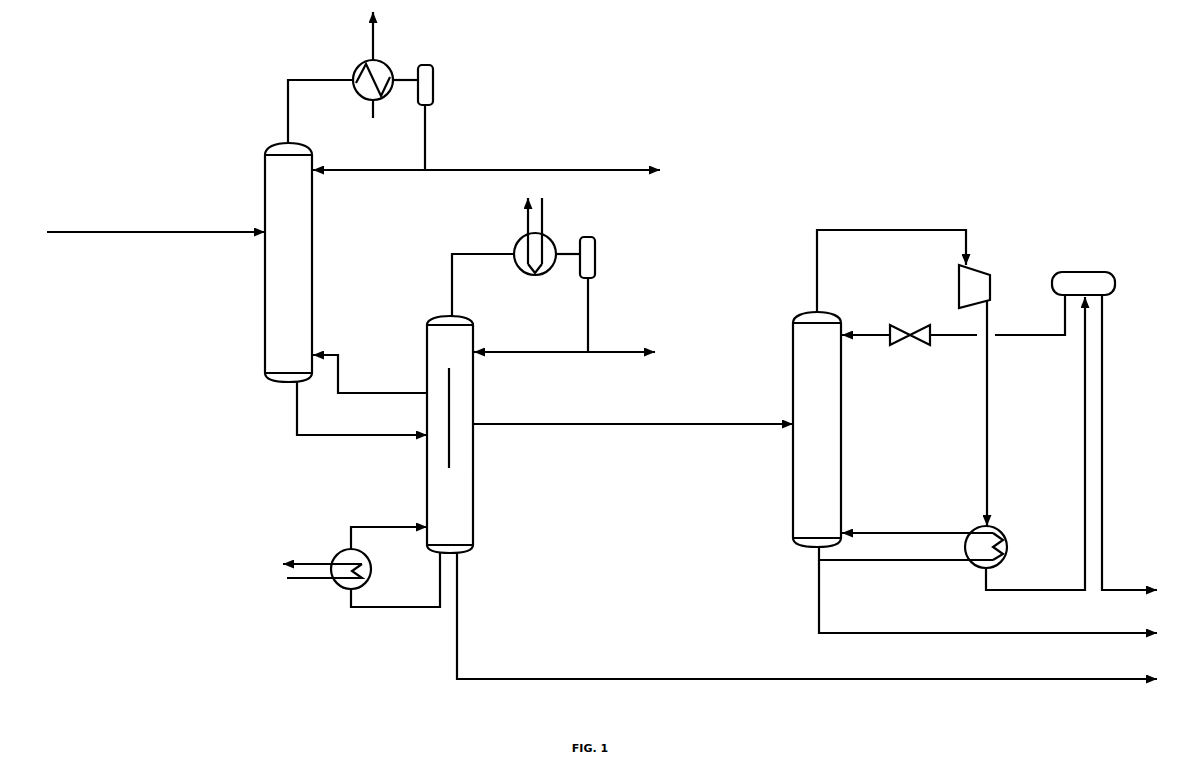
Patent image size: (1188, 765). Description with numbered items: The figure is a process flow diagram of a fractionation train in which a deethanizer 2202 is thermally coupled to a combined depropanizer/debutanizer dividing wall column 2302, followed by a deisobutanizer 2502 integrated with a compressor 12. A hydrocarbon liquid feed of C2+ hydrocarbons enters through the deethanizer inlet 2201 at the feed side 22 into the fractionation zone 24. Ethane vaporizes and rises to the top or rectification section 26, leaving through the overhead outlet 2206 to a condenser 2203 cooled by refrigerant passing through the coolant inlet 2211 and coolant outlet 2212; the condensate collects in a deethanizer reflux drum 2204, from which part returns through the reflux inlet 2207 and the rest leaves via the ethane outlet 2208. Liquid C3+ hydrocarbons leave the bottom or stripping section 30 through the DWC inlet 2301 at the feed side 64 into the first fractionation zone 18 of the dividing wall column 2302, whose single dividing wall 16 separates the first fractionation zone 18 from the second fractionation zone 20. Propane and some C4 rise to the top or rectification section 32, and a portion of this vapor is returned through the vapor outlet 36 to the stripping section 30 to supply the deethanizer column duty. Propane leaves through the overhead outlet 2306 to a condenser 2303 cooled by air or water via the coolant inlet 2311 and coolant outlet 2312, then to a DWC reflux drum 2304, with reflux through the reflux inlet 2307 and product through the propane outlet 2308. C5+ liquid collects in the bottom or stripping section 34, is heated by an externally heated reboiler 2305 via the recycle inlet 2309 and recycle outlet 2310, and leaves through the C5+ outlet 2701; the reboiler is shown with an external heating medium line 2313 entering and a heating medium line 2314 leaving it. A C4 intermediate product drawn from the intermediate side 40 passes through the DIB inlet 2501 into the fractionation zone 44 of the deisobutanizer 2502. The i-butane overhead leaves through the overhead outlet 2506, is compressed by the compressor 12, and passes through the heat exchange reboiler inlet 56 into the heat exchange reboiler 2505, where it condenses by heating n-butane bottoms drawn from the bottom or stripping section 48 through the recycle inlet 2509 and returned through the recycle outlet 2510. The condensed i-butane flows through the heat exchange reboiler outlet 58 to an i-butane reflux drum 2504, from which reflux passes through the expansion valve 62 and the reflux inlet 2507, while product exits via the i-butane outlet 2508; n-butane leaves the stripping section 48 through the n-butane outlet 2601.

The compressor 12 is at (957, 295).
The dividing wall 16 is at (451, 412).
The first fractionation zone 18 is at (437, 382).
The second fractionation zone 20 is at (467, 432).
The feed side 22 is at (262, 206).
The fractionation zone 24 is at (277, 255).
The top or rectification section 26 is at (285, 146).
The bottom or stripping section 30 is at (282, 373).
The top or rectification section 32 is at (455, 322).
The bottom or stripping section 34 is at (473, 553).
The vapor outlet 36 is at (392, 392).
The intermediate side 40 is at (475, 484).
The fractionation zone 44 is at (835, 412).
The bottom or stripping section 48 is at (822, 316).
The heat exchange reboiler inlet 56 is at (988, 421).
The heat exchange reboiler outlet 58 is at (1011, 591).
The expansion valve 62 is at (928, 343).
The feed side 64 is at (425, 451).
The deethanizer inlet 2201 is at (124, 231).
The deethanizer 2202 is at (250, 255).
The condenser 2203 is at (365, 63).
The deethanizer reflux drum 2204 is at (424, 67).
The overhead outlet 2206 is at (305, 78).
The reflux inlet 2207 is at (373, 169).
The ethane outlet 2208 is at (600, 169).
The coolant inlet 2211 is at (367, 111).
The coolant outlet 2212 is at (366, 27).
The DWC inlet 2301 is at (348, 434).
The depropanizer/debutanizer dividing wall column 2302 is at (421, 418).
The condenser 2303 is at (517, 239).
The DWC reflux drum 2304 is at (583, 238).
The externally heated reboiler 2305 is at (333, 554).
The overhead outlet 2306 is at (455, 252).
The reflux inlet 2307 is at (528, 351).
The propane outlet 2308 is at (637, 351).
The recycle inlet 2309 is at (417, 605).
The recycle outlet 2310 is at (372, 525).
The coolant inlet 2311 is at (545, 209).
The coolant outlet 2312 is at (522, 203).
The reboiler heating medium inlet 2313 is at (320, 583).
The reboiler heating medium outlet 2314 is at (302, 562).
The DIB inlet 2501 is at (680, 422).
The deisobutanizer 2502 is at (798, 436).
The i-butane reflux drum 2504 is at (1087, 270).
The heat exchange reboiler 2505 is at (970, 531).
The overhead outlet 2506 is at (817, 246).
The reflux inlet 2507 is at (1063, 321).
The i-butane outlet 2508 is at (1104, 423).
The recycle inlet 2509 is at (912, 562).
The recycle outlet 2510 is at (912, 532).
The n-butane outlet 2601 is at (960, 631).
The C5+ outlet 2701 is at (765, 677).